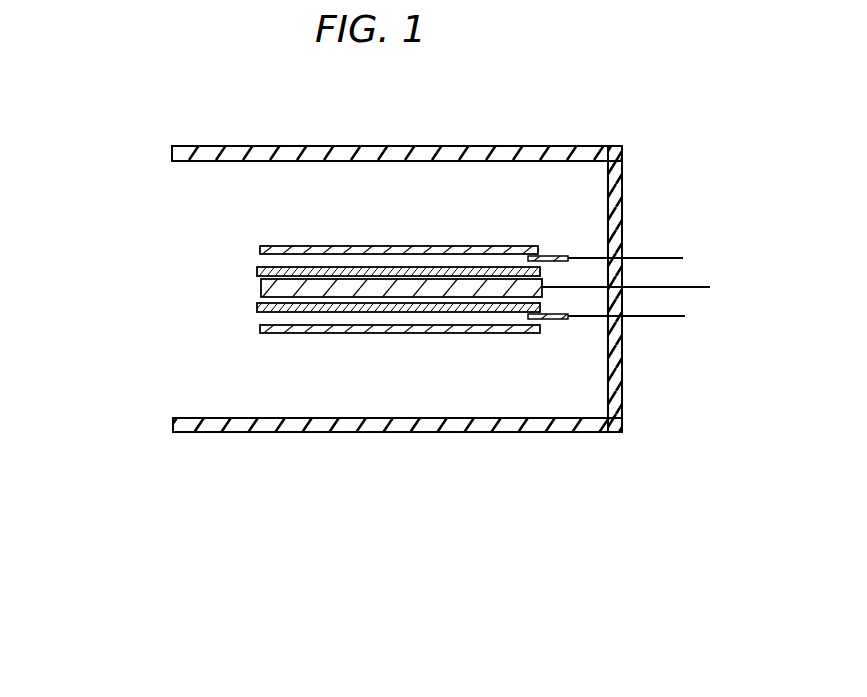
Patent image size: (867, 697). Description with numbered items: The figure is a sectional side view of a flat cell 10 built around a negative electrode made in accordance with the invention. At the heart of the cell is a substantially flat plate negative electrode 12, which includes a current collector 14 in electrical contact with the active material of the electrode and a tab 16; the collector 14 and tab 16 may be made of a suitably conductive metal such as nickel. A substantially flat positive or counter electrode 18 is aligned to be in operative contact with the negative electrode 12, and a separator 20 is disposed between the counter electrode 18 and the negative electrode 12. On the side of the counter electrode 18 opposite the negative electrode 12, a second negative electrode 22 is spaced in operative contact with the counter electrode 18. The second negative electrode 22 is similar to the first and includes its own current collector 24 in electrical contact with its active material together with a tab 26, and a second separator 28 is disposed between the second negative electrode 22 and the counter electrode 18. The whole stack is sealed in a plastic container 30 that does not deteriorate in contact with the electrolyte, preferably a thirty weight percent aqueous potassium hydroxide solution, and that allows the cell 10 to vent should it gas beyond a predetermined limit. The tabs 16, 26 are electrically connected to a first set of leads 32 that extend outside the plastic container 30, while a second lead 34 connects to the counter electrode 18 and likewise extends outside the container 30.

The flat cell 10 is at (132, 194).
The negative electrode 12 is at (289, 246).
The current collector 14 is at (376, 246).
The tab 16 is at (550, 256).
The counter electrode 18 is at (262, 288).
The separator 20 is at (257, 272).
The second negative electrode 22 is at (280, 334).
The current collector 24 is at (380, 334).
The tab 26 is at (553, 320).
The second separator 28 is at (257, 307).
The plastic container 30 is at (407, 433).
The first set of leads 32 is at (674, 252).
The second lead 34 is at (712, 280).